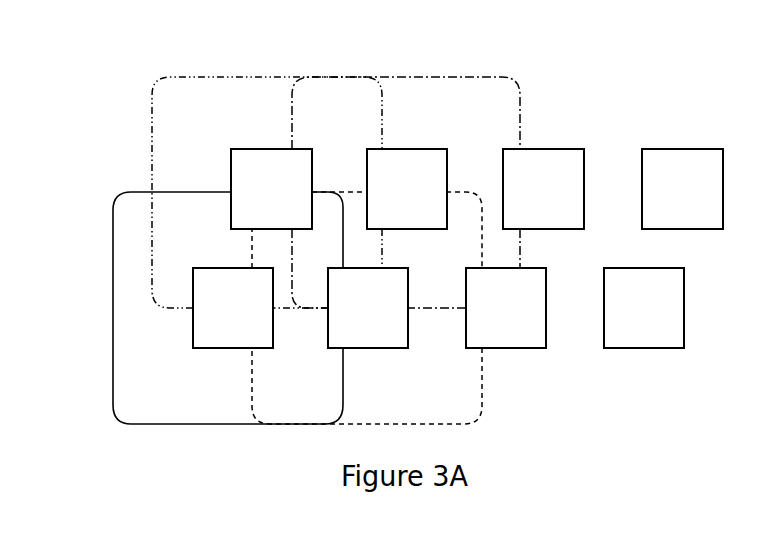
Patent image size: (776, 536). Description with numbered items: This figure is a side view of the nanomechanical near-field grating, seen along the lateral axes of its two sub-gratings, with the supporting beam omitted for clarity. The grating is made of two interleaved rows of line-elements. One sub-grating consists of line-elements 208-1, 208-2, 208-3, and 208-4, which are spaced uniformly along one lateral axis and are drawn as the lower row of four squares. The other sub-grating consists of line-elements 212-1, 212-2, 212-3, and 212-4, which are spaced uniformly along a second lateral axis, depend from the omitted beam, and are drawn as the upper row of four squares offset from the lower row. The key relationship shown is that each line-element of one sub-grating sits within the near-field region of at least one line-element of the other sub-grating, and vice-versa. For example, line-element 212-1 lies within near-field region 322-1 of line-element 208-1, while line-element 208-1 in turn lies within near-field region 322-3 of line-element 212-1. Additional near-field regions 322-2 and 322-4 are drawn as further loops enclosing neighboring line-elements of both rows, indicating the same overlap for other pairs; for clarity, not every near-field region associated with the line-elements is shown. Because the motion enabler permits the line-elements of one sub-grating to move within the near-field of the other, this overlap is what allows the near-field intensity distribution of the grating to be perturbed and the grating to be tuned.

The line-element 212-1 is at (299, 202).
The line-element 212-2 is at (435, 202).
The line-element 212-3 is at (571, 202).
The line-element 212-4 is at (710, 202).
The line-element 208-1 is at (261, 321).
The line-element 208-2 is at (396, 321).
The line-element 208-3 is at (534, 321).
The line-element 208-4 is at (672, 321).
The near-field region 322-1 is at (113, 390).
The near-field region 322-2 is at (482, 405).
The near-field region 322-3 is at (233, 75).
The near-field region 322-4 is at (500, 77).